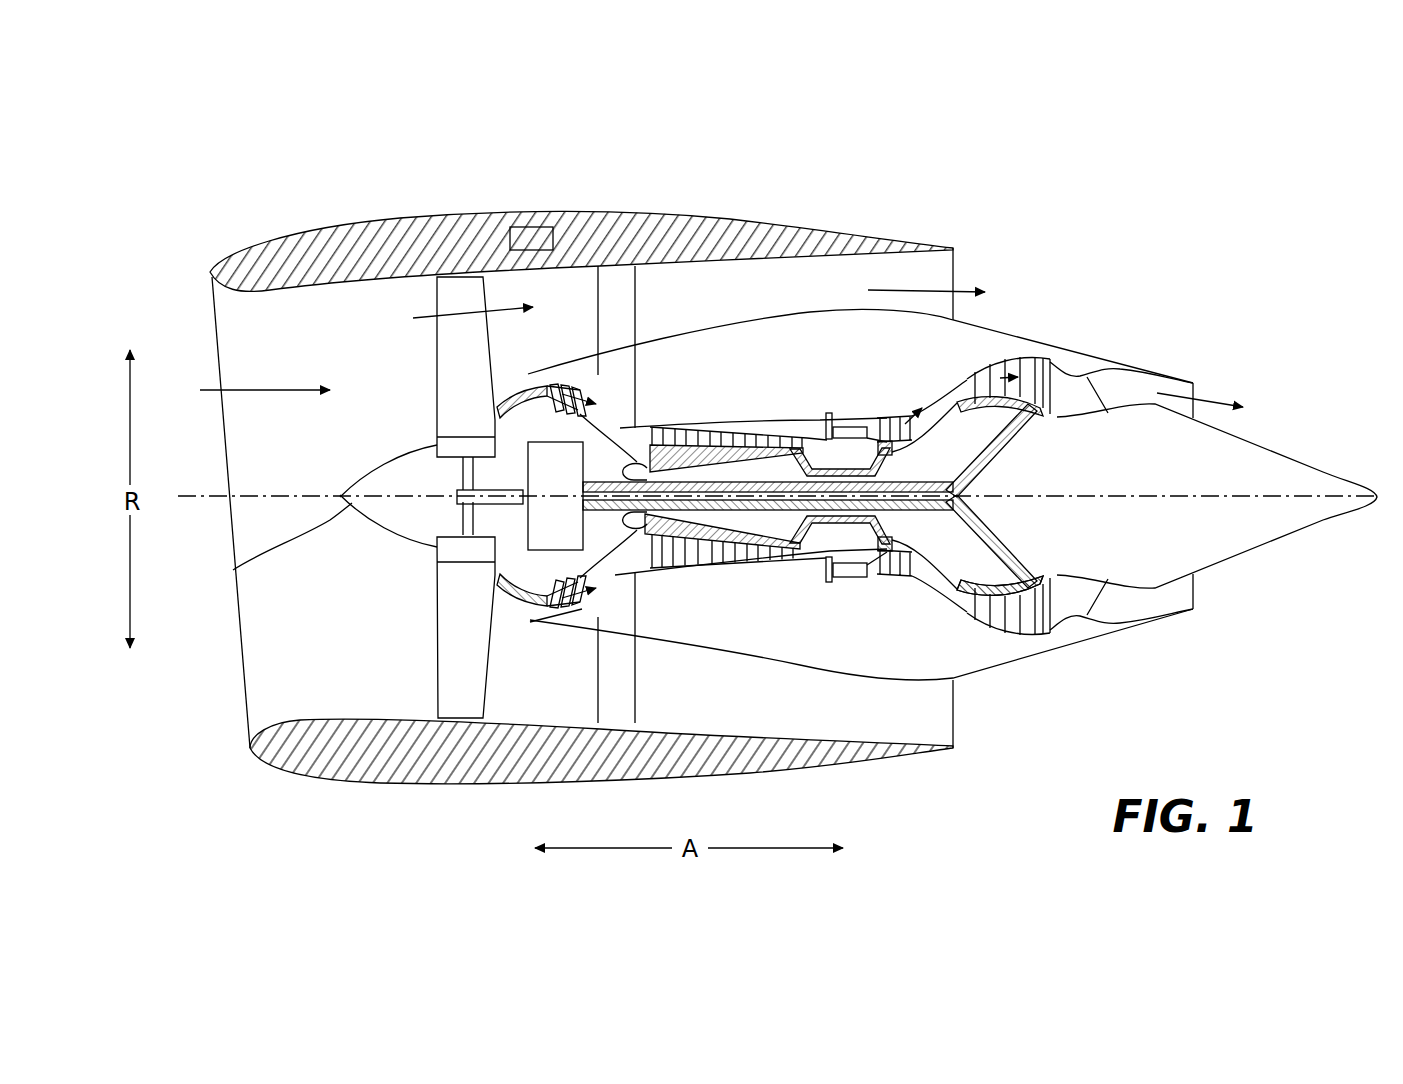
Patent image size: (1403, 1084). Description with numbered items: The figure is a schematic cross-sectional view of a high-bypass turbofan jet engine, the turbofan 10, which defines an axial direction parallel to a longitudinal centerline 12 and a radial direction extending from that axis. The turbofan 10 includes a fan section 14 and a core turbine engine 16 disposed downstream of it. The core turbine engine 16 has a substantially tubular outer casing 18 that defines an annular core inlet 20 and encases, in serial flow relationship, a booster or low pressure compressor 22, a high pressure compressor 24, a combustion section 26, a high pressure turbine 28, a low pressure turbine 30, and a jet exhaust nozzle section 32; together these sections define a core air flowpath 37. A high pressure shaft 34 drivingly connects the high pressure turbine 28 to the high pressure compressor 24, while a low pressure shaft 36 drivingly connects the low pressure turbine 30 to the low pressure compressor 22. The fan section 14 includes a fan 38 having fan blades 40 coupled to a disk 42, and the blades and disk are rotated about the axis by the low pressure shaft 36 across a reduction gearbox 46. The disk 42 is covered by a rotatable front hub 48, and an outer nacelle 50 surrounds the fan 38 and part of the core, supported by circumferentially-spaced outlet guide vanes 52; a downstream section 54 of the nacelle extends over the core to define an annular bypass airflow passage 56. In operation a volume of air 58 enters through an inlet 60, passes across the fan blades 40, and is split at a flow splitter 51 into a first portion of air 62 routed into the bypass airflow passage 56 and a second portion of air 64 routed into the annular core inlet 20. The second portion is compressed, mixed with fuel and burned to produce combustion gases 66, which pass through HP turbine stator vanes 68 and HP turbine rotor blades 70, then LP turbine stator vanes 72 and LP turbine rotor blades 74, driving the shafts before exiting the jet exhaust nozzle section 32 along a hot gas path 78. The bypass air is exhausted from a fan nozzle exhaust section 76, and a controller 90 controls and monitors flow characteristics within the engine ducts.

The turbofan 10 is at (1105, 227).
The longitudinal centerline 12 is at (1132, 497).
The fan section 14 is at (390, 298).
The core turbine engine 16 is at (763, 378).
The outer casing 18 is at (797, 670).
The annular core inlet 20 is at (530, 613).
The low pressure compressor 22 is at (597, 567).
The high pressure compressor 24 is at (667, 567).
The combustion section 26 is at (847, 567).
The high pressure turbine 28 is at (980, 570).
The low pressure turbine 30 is at (1040, 633).
The jet exhaust nozzle section 32 is at (1107, 613).
The high pressure shaft 34 is at (858, 455).
The low pressure shaft 36 is at (988, 463).
The core air flowpath 37 is at (618, 575).
The fan 38 is at (393, 557).
The fan blades 40 is at (437, 655).
The disk 42 is at (457, 450).
The reduction gearbox 46 is at (567, 460).
The front hub 48 is at (233, 570).
The outer nacelle 50 is at (478, 785).
The flow splitter 51 is at (577, 373).
The outlet guide vanes 52 is at (635, 272).
The downstream section 54 is at (895, 237).
The bypass airflow passage 56 is at (822, 306).
The volume of air 58 is at (265, 390).
The inlet 60 is at (243, 720).
The first portion of air 62 is at (453, 313).
The second portion of air 64 is at (532, 375).
The combustion gases 66 is at (1000, 377).
The HP turbine stator vanes 68 is at (867, 570).
The HP turbine rotor blades 70 is at (923, 547).
The LP turbine stator vanes 72 is at (957, 620).
The LP turbine rotor blades 74 is at (973, 623).
The fan nozzle exhaust section 76 is at (943, 273).
The hot gas path 78 is at (933, 397).
The controller 90 is at (523, 227).